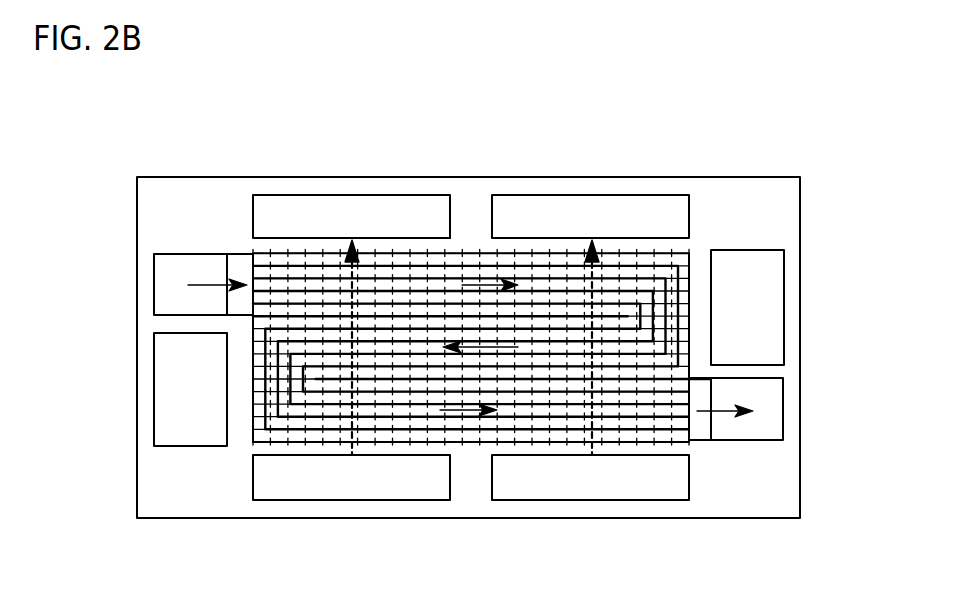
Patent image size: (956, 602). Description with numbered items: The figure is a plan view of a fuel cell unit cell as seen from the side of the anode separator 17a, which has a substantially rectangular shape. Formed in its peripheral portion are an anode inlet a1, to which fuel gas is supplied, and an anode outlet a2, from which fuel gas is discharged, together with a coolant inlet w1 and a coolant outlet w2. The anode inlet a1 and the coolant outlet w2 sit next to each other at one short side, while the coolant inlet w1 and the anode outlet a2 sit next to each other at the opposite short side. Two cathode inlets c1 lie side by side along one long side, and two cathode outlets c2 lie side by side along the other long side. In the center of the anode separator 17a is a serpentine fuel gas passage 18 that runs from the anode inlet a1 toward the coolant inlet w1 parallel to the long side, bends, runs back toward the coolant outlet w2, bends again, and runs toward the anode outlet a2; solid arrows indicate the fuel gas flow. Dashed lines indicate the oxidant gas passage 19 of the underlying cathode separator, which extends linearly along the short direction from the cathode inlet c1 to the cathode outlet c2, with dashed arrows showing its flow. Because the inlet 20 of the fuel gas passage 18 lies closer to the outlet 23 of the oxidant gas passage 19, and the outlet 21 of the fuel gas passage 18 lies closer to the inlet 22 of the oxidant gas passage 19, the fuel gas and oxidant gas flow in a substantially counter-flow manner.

The anode separator 17a is at (802, 210).
The fuel gas passage 18 is at (262, 432).
The oxidant gas passage 19 is at (540, 432).
The inlet of the fuel gas passage 20 is at (227, 270).
The outlet of the fuel gas passage 21 is at (712, 428).
The inlet of the oxidant gas passage 22 is at (412, 457).
The outlet of the oxidant gas passage 23 is at (430, 238).
The anode inlet a1 is at (167, 290).
The anode outlet a2 is at (770, 398).
The coolant inlet w1 is at (765, 310).
The coolant outlet w2 is at (175, 392).
The cathode inlet c1 is at (362, 487).
The cathode outlet c2 is at (378, 208).